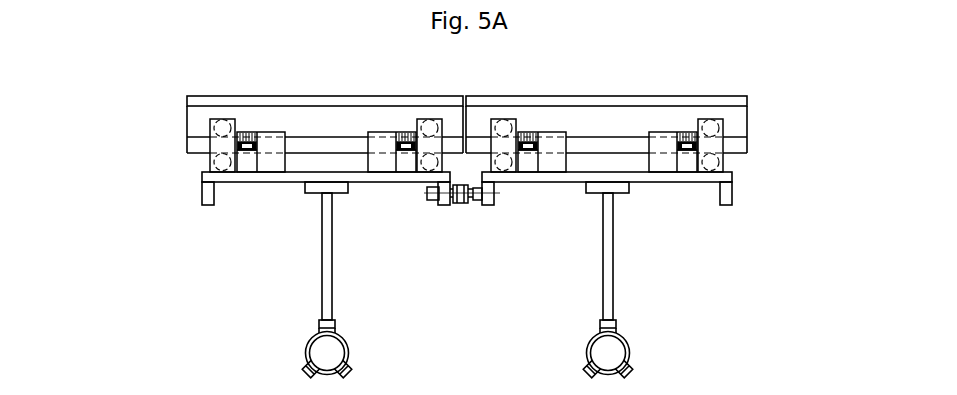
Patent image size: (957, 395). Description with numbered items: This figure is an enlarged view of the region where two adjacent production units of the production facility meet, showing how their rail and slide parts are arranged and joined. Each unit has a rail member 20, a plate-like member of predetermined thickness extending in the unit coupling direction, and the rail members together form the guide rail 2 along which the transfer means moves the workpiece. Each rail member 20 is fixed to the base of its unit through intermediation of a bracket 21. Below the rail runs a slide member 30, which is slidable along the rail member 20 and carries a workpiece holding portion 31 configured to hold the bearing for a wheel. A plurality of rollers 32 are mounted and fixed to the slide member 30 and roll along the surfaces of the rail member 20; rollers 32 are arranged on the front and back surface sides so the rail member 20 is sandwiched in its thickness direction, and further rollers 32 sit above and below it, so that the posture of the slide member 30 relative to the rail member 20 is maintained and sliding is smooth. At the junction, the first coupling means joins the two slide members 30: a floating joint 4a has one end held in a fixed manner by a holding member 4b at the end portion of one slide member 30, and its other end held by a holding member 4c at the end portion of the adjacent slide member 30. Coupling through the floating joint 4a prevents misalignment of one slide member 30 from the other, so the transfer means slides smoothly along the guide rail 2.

The guide rail 2 is at (476, 109).
The rail member 20 is at (192, 145).
The bracket 21 is at (323, 118).
The roller 32 is at (218, 158).
The slide member 30 is at (270, 192).
The workpiece holding portion 31 is at (322, 348).
The floating joint 4a is at (457, 214).
The holding member 4b is at (444, 204).
The holding member 4c is at (203, 194).